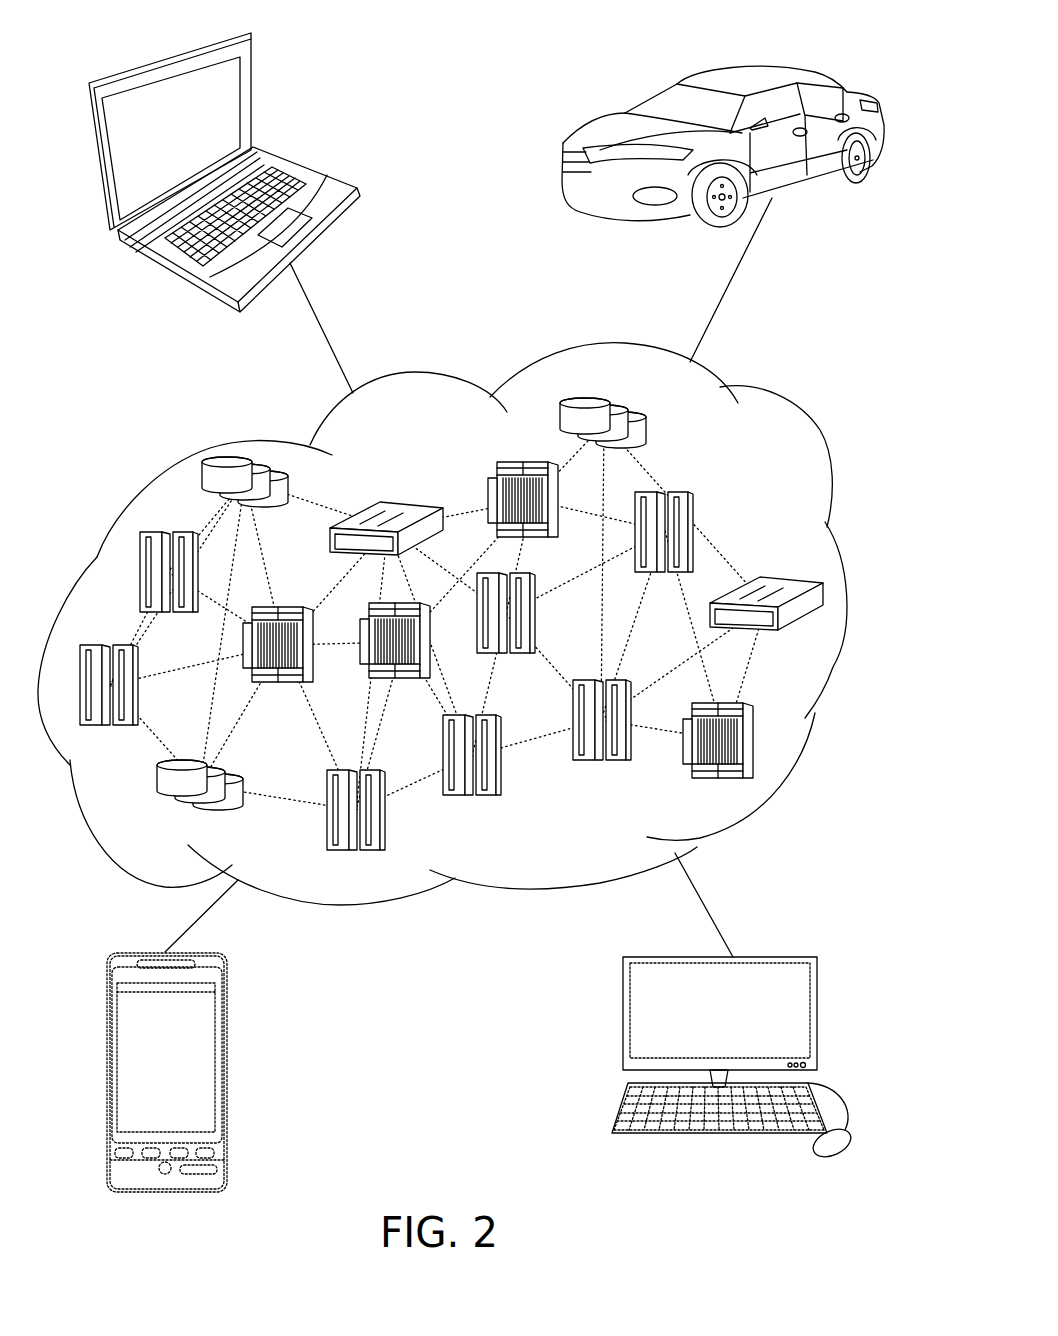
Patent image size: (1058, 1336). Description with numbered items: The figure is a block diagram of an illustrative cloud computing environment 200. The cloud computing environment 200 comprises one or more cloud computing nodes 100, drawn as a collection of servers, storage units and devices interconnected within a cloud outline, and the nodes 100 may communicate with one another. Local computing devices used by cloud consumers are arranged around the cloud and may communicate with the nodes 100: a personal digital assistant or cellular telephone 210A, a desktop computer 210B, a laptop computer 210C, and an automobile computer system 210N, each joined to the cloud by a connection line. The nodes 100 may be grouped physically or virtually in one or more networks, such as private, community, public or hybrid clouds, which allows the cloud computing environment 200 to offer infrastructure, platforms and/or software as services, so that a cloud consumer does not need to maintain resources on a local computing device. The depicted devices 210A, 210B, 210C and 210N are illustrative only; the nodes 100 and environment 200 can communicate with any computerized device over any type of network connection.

The cloud computing node 100 is at (788, 571).
The cloud computing environment 200 is at (800, 416).
The personal digital assistant (PDA) or cellular telephone 210A is at (225, 978).
The desktop computer 210B is at (817, 975).
The laptop computer 210C is at (310, 172).
The automobile computer system 210N is at (833, 82).